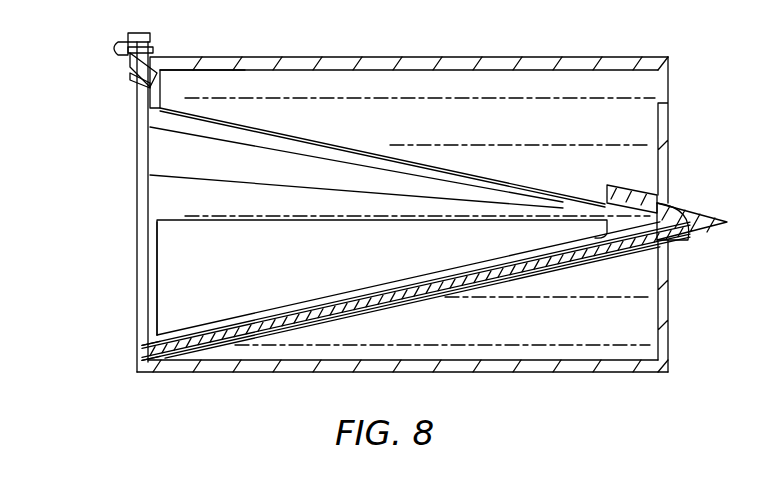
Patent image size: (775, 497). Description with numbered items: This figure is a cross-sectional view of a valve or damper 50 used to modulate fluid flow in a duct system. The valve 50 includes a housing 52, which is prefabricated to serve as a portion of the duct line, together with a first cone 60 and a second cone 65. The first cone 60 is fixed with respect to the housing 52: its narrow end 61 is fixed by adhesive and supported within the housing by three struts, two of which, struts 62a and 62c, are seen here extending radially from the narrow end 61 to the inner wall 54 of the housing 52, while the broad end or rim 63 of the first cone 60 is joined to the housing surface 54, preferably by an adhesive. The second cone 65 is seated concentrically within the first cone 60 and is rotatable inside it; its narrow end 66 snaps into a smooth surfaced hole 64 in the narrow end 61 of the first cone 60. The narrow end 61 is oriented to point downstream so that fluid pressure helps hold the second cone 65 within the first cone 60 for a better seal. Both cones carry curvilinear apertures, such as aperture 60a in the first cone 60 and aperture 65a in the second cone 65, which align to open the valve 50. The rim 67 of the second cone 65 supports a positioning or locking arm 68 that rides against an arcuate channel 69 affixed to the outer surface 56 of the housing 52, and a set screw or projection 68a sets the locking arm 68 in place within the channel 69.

The valve 50 is at (573, 90).
The housing 52 is at (358, 58).
The inner wall 54 is at (183, 98).
The outer surface 56 is at (248, 58).
The first cone 60 is at (248, 342).
The aperture 60a is at (172, 293).
The narrow end 61 is at (668, 202).
The strut 62a is at (665, 137).
The strut 62c is at (665, 325).
The rim 63 is at (136, 360).
The hole 64 is at (670, 205).
The second cone 65 is at (343, 160).
The aperture 65a is at (170, 255).
The narrow end 66 is at (692, 232).
The rim 67 is at (133, 80).
The locking arm 68 is at (130, 70).
The set screw 68a is at (120, 46).
The arcuate channel 69 is at (148, 38).